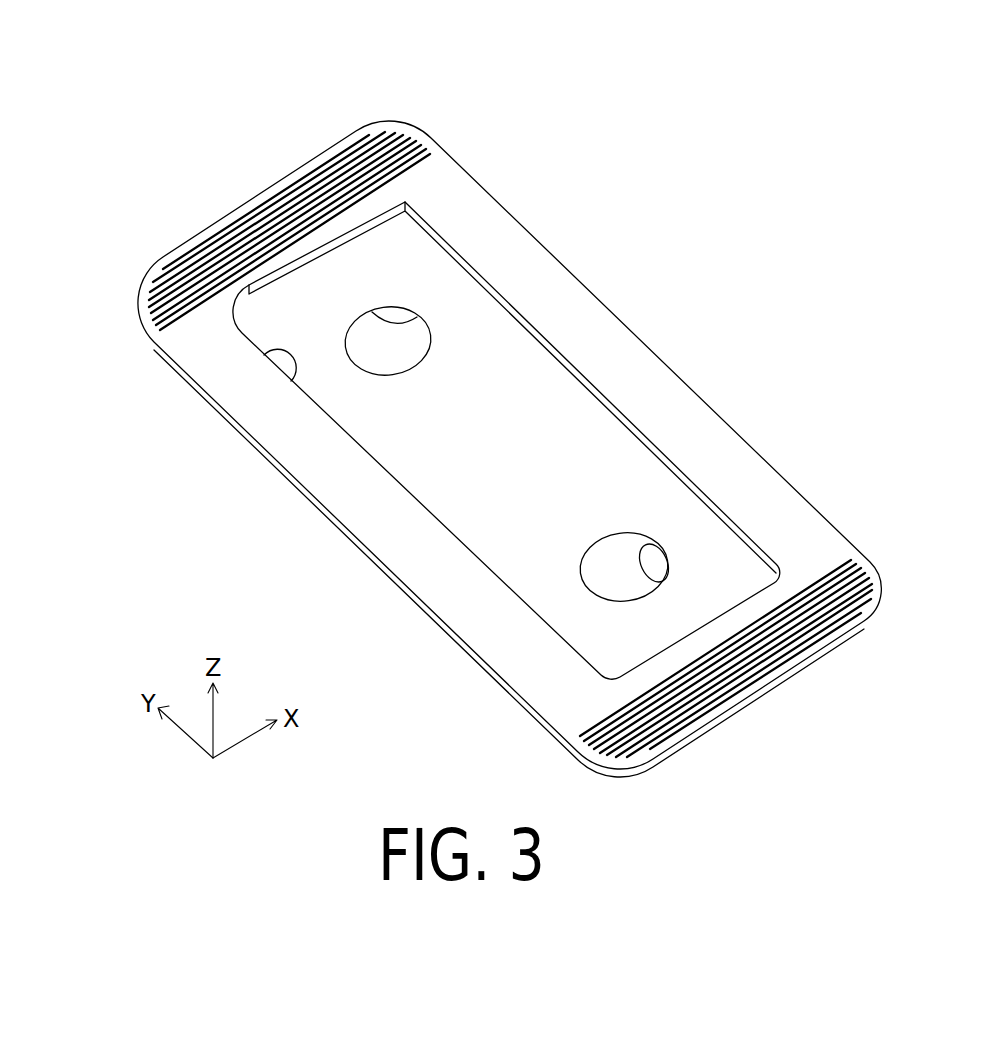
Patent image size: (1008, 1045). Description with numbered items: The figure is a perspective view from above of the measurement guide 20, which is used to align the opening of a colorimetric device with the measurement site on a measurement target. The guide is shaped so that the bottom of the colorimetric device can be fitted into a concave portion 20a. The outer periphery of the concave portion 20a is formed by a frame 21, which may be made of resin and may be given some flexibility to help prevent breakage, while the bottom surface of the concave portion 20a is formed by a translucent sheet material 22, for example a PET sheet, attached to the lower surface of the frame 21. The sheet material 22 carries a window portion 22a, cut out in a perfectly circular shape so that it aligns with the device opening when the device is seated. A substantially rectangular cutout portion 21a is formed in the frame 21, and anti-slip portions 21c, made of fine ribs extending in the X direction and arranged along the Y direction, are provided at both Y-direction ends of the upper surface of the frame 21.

The measurement guide 20 is at (462, 398).
The concave portion 20a is at (485, 336).
The frame 21 is at (462, 449).
The cutout portion 21a is at (283, 350).
The anti-slip portion 21c is at (148, 292).
The sheet material 22 is at (555, 400).
The window portion 22a is at (377, 310).